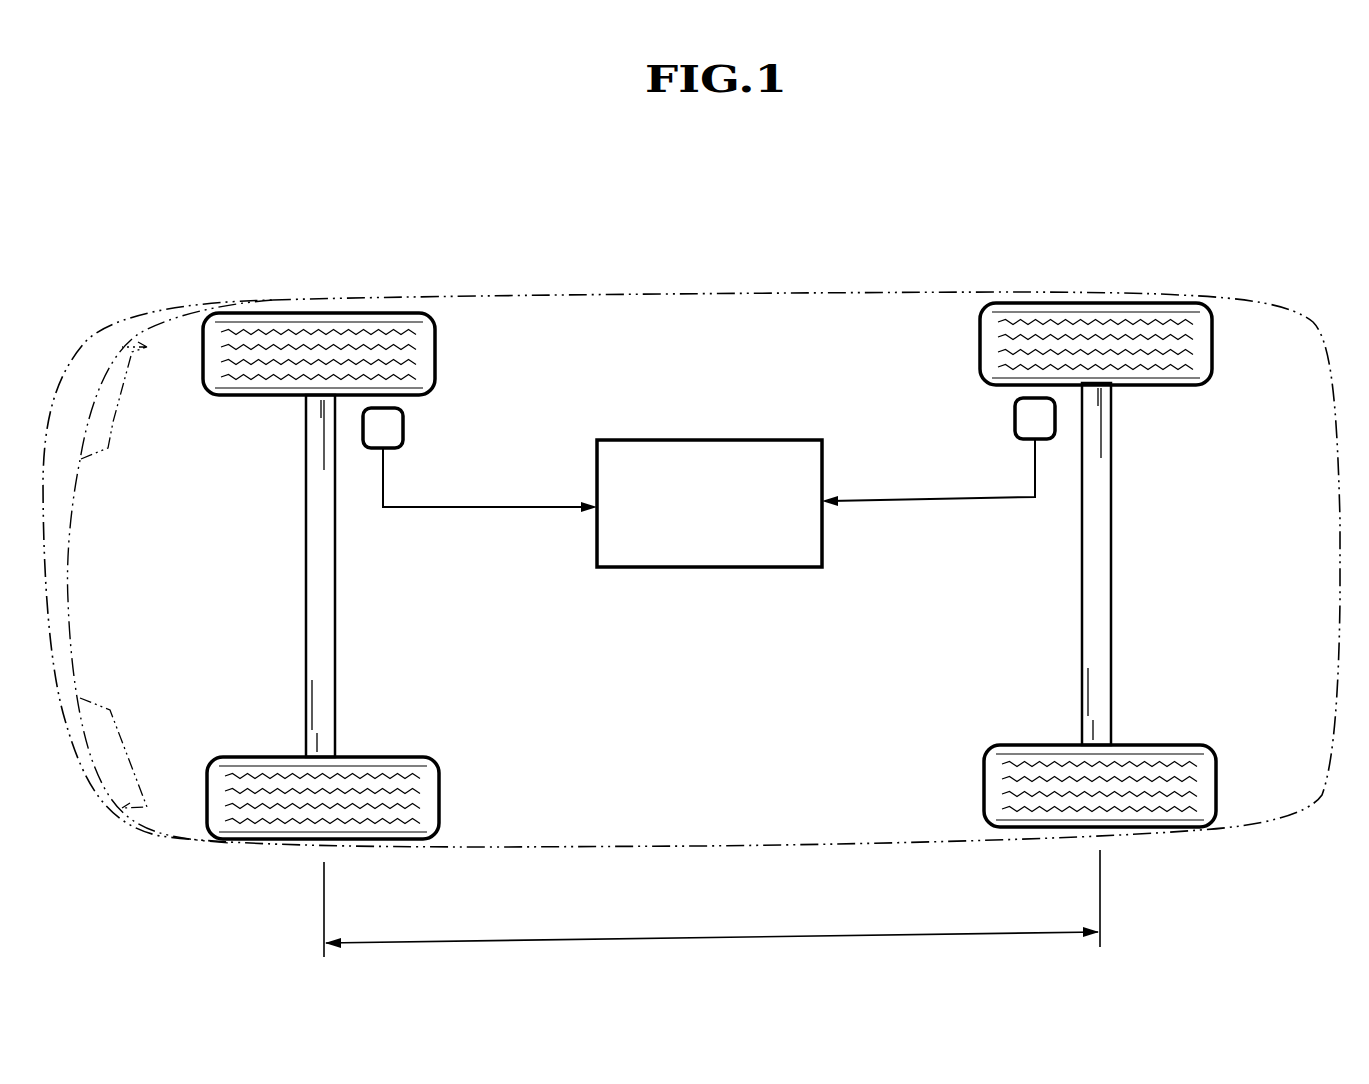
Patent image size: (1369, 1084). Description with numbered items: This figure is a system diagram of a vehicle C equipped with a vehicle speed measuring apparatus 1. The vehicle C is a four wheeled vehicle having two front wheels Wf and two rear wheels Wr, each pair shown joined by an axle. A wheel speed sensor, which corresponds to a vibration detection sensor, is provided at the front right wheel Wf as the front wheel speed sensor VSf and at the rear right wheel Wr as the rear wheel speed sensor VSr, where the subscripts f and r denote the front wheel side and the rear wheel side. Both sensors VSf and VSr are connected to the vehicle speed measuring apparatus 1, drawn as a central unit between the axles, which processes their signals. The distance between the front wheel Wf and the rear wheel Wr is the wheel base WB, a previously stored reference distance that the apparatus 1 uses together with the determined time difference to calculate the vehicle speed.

The vehicle speed measuring apparatus 1 is at (692, 424).
The vehicle C is at (760, 282).
The front wheel Wf is at (423, 352).
The rear wheel Wr is at (994, 343).
The front wheel speed sensor VSf is at (403, 428).
The rear wheel speed sensor VSr is at (1025, 422).
The wheel base WB is at (712, 903).